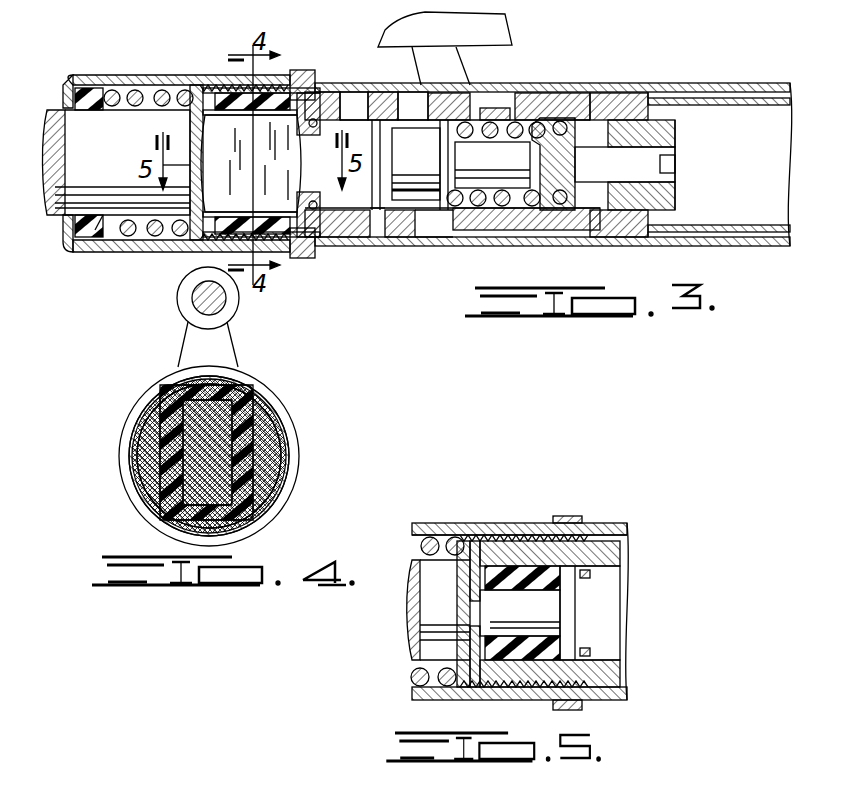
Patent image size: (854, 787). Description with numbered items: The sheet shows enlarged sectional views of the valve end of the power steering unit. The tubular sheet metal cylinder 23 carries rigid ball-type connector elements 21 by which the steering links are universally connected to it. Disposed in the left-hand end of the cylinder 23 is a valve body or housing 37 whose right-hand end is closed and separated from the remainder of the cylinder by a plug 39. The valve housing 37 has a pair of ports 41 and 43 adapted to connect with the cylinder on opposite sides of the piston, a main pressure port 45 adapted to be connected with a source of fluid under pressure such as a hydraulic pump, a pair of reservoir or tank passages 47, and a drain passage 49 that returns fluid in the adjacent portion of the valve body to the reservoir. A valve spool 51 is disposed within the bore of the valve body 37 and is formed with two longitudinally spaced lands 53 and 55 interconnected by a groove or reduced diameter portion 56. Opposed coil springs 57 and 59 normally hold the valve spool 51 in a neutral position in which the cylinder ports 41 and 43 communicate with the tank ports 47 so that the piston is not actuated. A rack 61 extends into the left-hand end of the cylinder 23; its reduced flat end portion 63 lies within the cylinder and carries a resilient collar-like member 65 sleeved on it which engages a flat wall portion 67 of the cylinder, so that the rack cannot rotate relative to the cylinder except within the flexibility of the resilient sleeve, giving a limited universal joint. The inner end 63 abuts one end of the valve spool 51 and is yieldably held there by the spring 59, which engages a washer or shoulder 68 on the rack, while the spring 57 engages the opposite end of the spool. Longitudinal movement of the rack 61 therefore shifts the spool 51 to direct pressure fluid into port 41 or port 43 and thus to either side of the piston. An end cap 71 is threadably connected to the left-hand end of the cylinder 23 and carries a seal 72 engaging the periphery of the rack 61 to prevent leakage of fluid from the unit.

In FIG. 3, the ball-type connector element 21 is at (470, 50).
In FIG. 3, the tubular sheet metal cylinder 23 is at (703, 83).
In FIG. 5, the tubular sheet metal cylinder 23 is at (627, 530).
In FIG. 3, the valve body or housing 37 is at (592, 102).
In FIG. 3, the plug 39 is at (668, 134).
In FIG. 3, the port 41 is at (347, 238).
In FIG. 3, the port 43 is at (432, 235).
In FIG. 3, the main pressure port 45 is at (400, 96).
In FIG. 3, the reservoir or tank passage 47 is at (352, 96).
In FIG. 3, the drain passage 49 is at (528, 108).
In FIG. 3, the valve spool 51 is at (398, 240).
In FIG. 3, the land 53 is at (416, 179).
In FIG. 3, the land 55 is at (416, 164).
In FIG. 3, the groove or reduced diameter portion 56 is at (425, 118).
In FIG. 3, the coil spring 57 is at (562, 102).
In FIG. 3, the coil spring 59 is at (138, 92).
In FIG. 5, the coil spring 59 is at (412, 680).
In FIG. 3, the rack 61 is at (116, 162).
In FIG. 5, the rack 61 is at (412, 562).
In FIG. 3, the reduced flat end portion 63 is at (251, 163).
In FIG. 4, the reduced flat end portion 63 is at (243, 395).
In FIG. 5, the reduced flat end portion 63 is at (520, 613).
In FIG. 3, the resilient collar-like member 65 is at (212, 236).
In FIG. 4, the resilient collar-like member 65 is at (209, 456).
In FIG. 5, the resilient collar-like member 65 is at (560, 570).
In FIG. 3, the flat wall portion 67 is at (252, 163).
In FIG. 4, the flat wall portion 67 is at (165, 425).
In FIG. 5, the flat wall portion 67 is at (522, 613).
In FIG. 5, the washer or shoulder 68 is at (462, 538).
In FIG. 3, the end cap 71 is at (192, 78).
In FIG. 4, the end cap 71 is at (292, 458).
In FIG. 5, the end cap 71 is at (485, 525).
In FIG. 3, the seal 72 is at (95, 232).